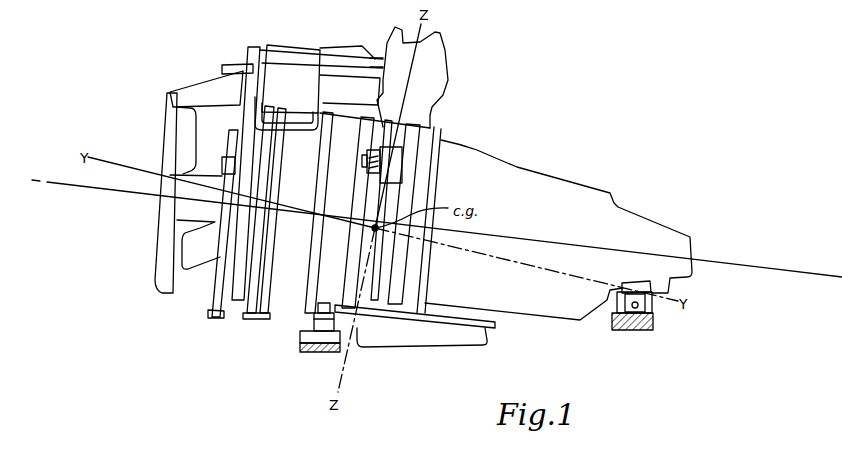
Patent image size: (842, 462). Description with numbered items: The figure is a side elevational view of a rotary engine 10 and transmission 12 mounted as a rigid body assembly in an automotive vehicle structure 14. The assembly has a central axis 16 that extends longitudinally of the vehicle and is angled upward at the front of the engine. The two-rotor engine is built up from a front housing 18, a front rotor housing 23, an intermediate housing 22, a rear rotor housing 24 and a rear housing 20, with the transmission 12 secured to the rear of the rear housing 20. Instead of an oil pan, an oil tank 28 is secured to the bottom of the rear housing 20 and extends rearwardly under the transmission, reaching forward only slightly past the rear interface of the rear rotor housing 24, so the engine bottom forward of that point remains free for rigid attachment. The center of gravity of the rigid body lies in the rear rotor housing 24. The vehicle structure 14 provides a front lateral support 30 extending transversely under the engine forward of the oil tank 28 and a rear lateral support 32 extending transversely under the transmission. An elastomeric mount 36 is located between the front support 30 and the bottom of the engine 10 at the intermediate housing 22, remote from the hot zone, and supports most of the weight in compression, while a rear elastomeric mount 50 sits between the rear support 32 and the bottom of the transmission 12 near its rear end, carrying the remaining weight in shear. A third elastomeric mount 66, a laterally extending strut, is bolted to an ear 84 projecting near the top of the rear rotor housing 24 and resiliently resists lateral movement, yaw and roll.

The rotary engine 10 is at (437, 118).
The transmission 12 is at (552, 180).
The automotive vehicle structure 14 is at (493, 352).
The central axis 16 is at (727, 260).
The front housing 18 is at (253, 288).
The rear housing 20 is at (394, 302).
The intermediate housing 22 is at (315, 296).
The front rotor housing 23 is at (250, 300).
The rear rotor housing 24 is at (350, 292).
The oil tank 28 is at (440, 335).
The front lateral support 30 is at (330, 357).
The rear lateral support 32 is at (620, 328).
The elastomeric mount 36 is at (303, 352).
The rear elastomeric mount 50 is at (657, 307).
The third elastomeric mount 66 is at (373, 148).
The ear 84 is at (405, 163).